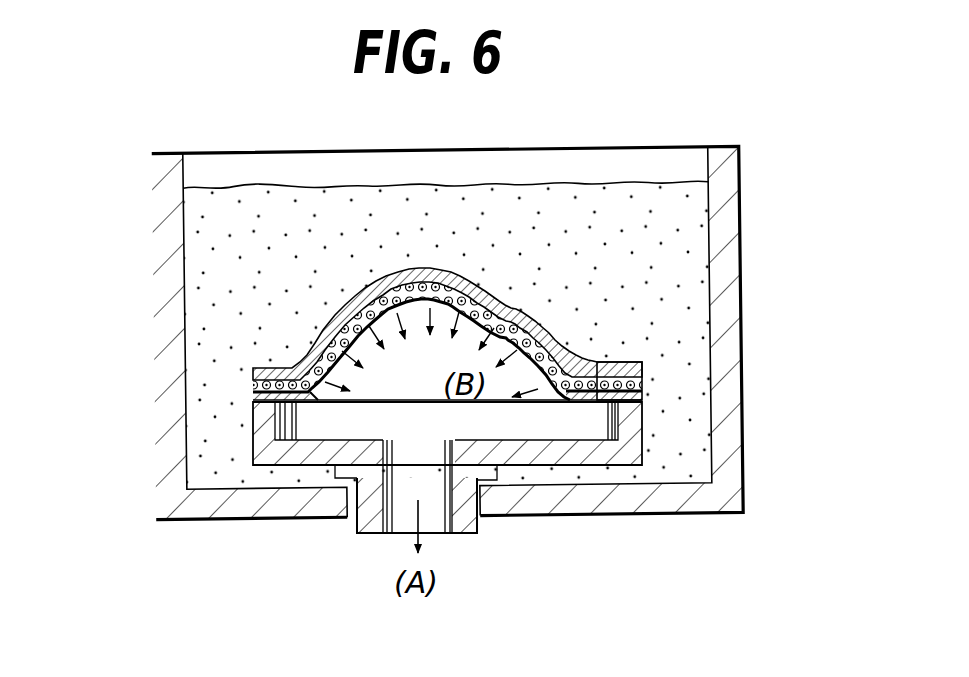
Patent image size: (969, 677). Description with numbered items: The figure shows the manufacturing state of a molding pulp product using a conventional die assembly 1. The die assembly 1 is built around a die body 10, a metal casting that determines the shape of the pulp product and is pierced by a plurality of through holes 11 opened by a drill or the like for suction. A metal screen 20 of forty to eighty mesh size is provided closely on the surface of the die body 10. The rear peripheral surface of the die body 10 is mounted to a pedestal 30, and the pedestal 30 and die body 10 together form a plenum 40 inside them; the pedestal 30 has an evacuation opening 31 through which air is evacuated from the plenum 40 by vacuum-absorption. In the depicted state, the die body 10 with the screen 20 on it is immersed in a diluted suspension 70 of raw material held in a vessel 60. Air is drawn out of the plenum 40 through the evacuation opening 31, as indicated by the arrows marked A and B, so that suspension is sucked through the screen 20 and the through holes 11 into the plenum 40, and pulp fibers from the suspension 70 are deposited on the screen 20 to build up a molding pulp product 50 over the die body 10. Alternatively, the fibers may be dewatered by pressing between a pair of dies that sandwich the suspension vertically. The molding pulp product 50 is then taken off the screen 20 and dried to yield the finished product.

The die assembly 1 is at (650, 381).
The die body 10 is at (255, 402).
The through holes 11 is at (431, 268).
The screen 20 is at (253, 379).
The pedestal 30 is at (287, 465).
The evacuation opening 31 is at (393, 532).
The plenum 40 is at (426, 399).
The molding pulp product 50 is at (645, 343).
The vessel 60 is at (171, 242).
The diluted suspension 70 is at (673, 240).